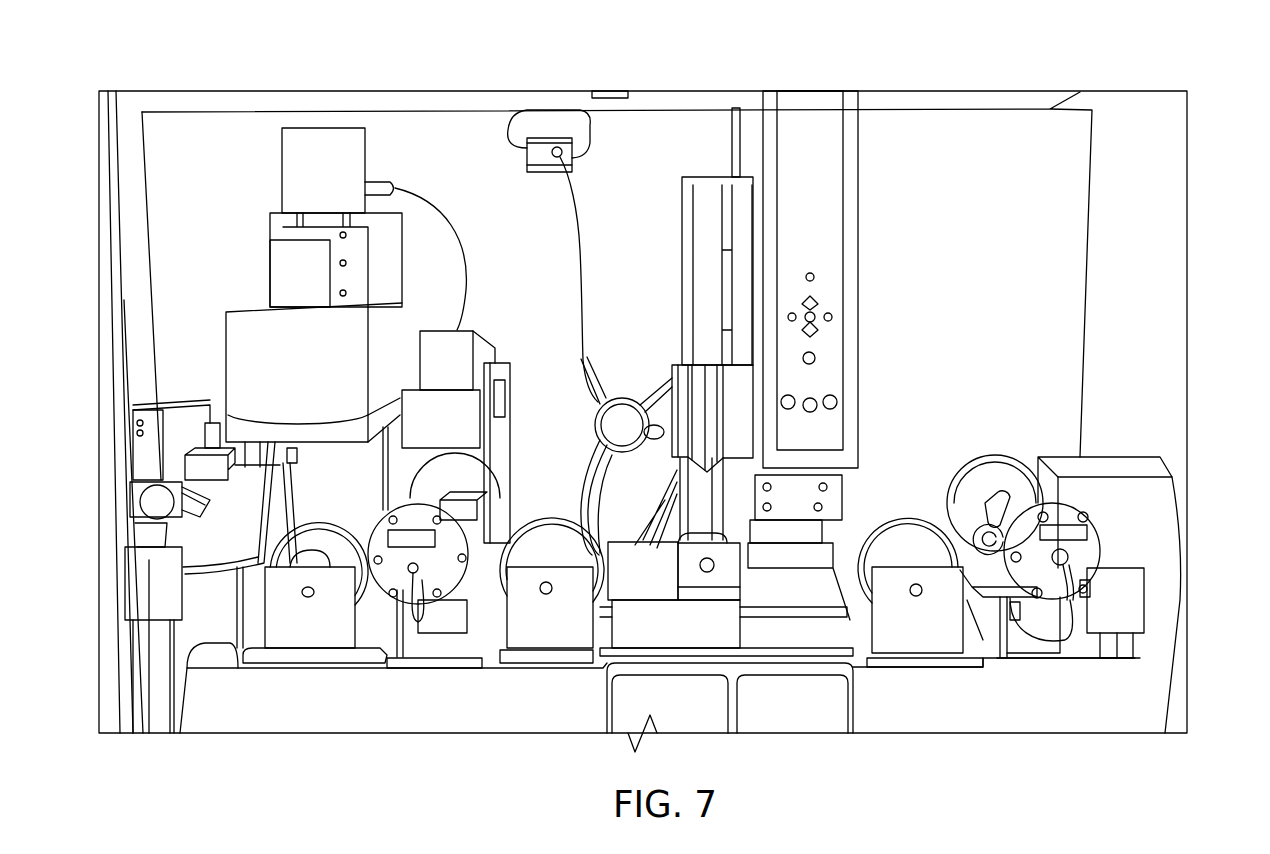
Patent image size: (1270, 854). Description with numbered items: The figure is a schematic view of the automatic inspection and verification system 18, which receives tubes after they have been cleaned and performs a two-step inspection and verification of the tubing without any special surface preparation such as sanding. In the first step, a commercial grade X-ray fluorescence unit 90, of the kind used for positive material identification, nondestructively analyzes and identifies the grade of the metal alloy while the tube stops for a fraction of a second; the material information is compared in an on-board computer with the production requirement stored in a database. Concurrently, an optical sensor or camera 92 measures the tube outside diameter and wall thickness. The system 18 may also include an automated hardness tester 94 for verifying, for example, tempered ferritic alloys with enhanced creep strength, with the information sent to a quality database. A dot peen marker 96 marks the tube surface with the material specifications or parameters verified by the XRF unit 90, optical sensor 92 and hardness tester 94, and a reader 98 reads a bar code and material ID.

The automatic inspection and verification system 18 is at (643, 421).
The X-ray fluorescence (XRF) unit 90 is at (1148, 602).
The optical sensor or camera 92 is at (125, 592).
The automated hardness tester 94 is at (702, 648).
The dot peen marker 96 is at (283, 273).
The reader 98 is at (480, 349).